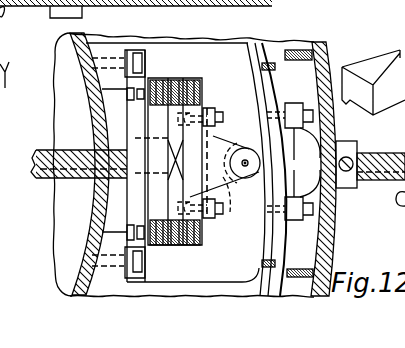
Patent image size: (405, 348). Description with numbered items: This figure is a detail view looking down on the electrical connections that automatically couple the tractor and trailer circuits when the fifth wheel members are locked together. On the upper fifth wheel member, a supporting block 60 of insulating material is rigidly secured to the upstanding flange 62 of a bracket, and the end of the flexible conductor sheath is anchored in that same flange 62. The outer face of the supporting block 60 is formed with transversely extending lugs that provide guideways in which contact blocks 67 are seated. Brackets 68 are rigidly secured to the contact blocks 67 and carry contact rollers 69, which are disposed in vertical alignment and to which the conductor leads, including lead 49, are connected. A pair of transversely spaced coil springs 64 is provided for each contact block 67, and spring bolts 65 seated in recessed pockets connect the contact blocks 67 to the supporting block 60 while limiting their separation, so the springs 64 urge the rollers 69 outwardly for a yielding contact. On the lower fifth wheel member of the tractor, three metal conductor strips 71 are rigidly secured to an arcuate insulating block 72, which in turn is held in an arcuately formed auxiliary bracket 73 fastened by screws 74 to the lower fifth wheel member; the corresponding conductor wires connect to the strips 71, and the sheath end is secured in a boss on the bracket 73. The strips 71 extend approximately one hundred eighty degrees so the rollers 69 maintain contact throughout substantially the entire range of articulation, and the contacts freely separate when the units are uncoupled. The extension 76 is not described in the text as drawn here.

The conductor lead 49 is at (110, 136).
The supporting block 60 is at (178, 195).
The upstanding flange 62 is at (97, 114).
The coil springs 64 is at (172, 100).
The spring bolts 65 is at (146, 83).
The contact blocks 67 is at (190, 156).
The brackets 68 is at (222, 207).
The contact rollers 69 is at (231, 146).
The conductor strips 71 is at (262, 96).
The insulating block 72 is at (280, 42).
The auxiliary bracket 73 is at (335, 64).
The screws 74 is at (60, 14).
The housing top 76 is at (224, 65).